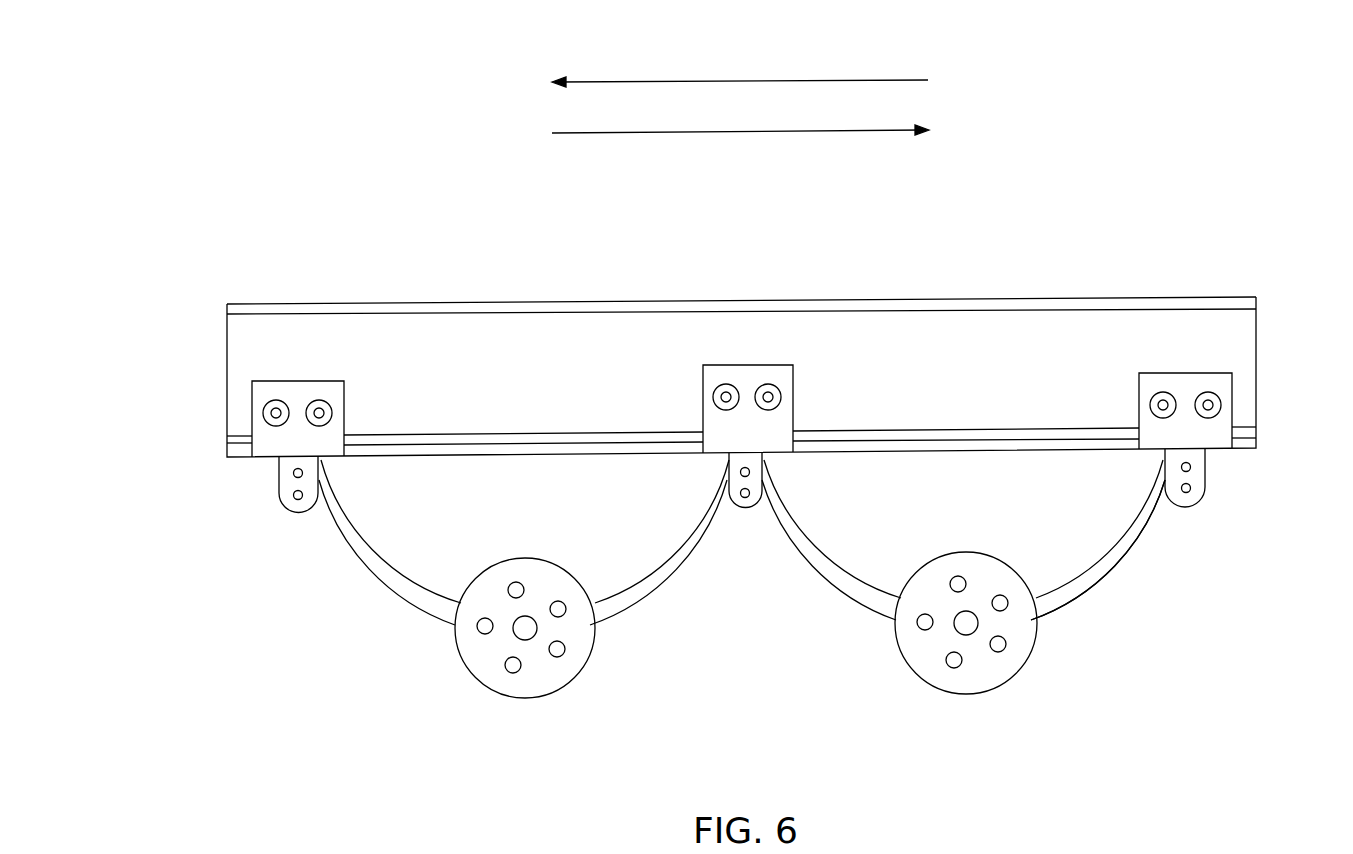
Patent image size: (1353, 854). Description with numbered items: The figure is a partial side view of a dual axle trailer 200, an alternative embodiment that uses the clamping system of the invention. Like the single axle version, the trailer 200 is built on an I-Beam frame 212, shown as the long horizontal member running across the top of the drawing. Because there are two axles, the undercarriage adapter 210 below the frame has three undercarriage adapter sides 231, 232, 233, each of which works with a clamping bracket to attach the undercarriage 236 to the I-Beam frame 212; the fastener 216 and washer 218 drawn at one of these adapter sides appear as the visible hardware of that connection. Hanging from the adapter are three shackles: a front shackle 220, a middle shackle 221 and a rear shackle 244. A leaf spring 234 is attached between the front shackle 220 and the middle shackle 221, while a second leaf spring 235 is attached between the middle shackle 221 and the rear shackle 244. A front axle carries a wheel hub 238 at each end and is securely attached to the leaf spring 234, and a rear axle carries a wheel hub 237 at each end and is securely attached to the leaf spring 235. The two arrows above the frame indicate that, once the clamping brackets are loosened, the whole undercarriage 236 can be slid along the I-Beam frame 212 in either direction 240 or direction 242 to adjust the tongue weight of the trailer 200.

The dual axle trailer 200 is at (1110, 134).
The undercarriage adapter 210 is at (1250, 450).
The I-Beam frame 212 is at (1118, 297).
The fastener 216 is at (1213, 407).
The washer 218 is at (1222, 398).
The front shackle 220 is at (1185, 508).
The middle shackle 221 is at (745, 510).
The undercarriage adapter side 231 is at (263, 392).
The undercarriage adapter side 232 is at (1188, 385).
The undercarriage adapter side 233 is at (743, 378).
The leaf spring 234 is at (1103, 585).
The leaf spring 235 is at (670, 580).
The undercarriage 236 is at (213, 440).
The wheel hub 237 is at (524, 698).
The wheel hub 238 is at (975, 695).
The direction 240 is at (687, 80).
The direction 242 is at (656, 134).
The rear shackle 244 is at (299, 513).